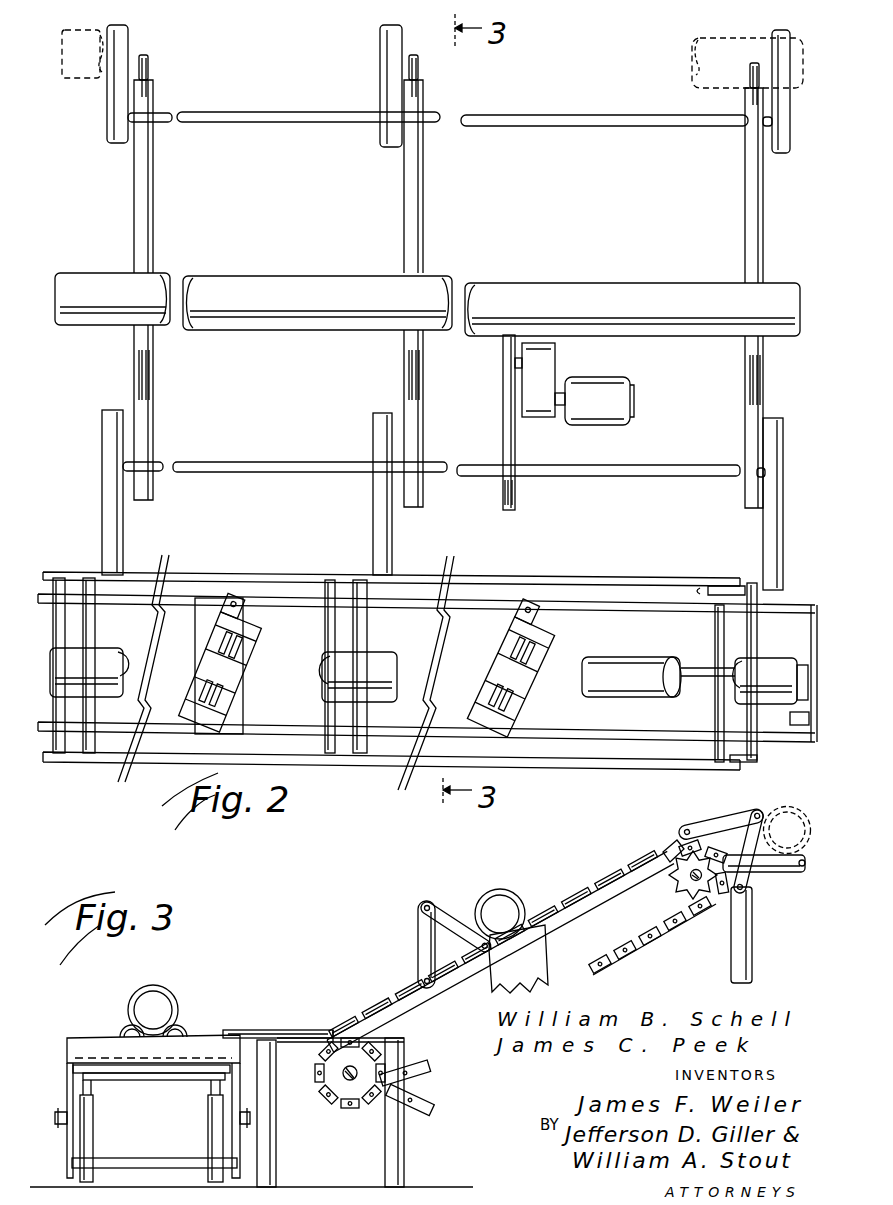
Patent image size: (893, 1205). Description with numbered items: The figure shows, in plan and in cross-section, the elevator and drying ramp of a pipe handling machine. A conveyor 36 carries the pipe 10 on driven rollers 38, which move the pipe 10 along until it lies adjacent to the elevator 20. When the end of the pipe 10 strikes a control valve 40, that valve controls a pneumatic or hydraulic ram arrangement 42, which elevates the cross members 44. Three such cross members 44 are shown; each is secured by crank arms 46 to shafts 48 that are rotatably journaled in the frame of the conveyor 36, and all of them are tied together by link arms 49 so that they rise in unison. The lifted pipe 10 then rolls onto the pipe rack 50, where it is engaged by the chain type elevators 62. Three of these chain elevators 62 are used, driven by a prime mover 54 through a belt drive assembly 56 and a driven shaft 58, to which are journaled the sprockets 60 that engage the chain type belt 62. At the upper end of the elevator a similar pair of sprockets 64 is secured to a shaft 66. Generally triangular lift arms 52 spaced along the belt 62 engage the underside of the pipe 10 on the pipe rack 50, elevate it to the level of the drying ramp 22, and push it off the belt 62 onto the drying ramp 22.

In FIG. 2, the pipe 10 is at (698, 60).
In FIG. 3, the pipe 10 is at (174, 997).
In FIG. 2, the elevator 20 is at (163, 446).
In FIG. 3, the elevator 20 is at (572, 897).
In FIG. 2, the drying ramp 22 is at (372, 63).
In FIG. 3, the drying ramp 22 is at (750, 937).
In FIG. 2, the conveyor 36 is at (268, 742).
In FIG. 3, the conveyor 36 is at (63, 1067).
In FIG. 2, the driven rollers 38 is at (203, 690).
In FIG. 3, the driven rollers 38 is at (185, 1031).
In FIG. 2, the control valve 40 is at (797, 724).
In FIG. 2, the ram arrangement 42 is at (625, 659).
In FIG. 2, the cross members 44 is at (90, 617).
In FIG. 3, the cross members 44 is at (95, 1036).
In FIG. 2, the crank arms 46 is at (708, 594).
In FIG. 2, the shafts 48 is at (715, 711).
In FIG. 2, the link arms 49 is at (572, 571).
In FIG. 2, the pipe rack 50 is at (372, 526).
In FIG. 3, the pipe rack 50 is at (326, 1030).
In FIG. 2, the lift arms 52 is at (150, 66).
In FIG. 3, the lift arms 52 is at (418, 928).
In FIG. 2, the prime mover 54 is at (615, 385).
In FIG. 2, the belt drive assembly 56 is at (495, 397).
In FIG. 2, the driven shaft 58 is at (662, 468).
In FIG. 3, the sprockets 60 is at (347, 1094).
In FIG. 2, the chain type elevators 62 is at (424, 200).
In FIG. 3, the chain type elevators 62 is at (388, 1016).
In FIG. 3, the sprockets 64 is at (672, 895).
In FIG. 2, the shaft 66 is at (560, 115).
In FIG. 3, the shaft 66 is at (716, 915).